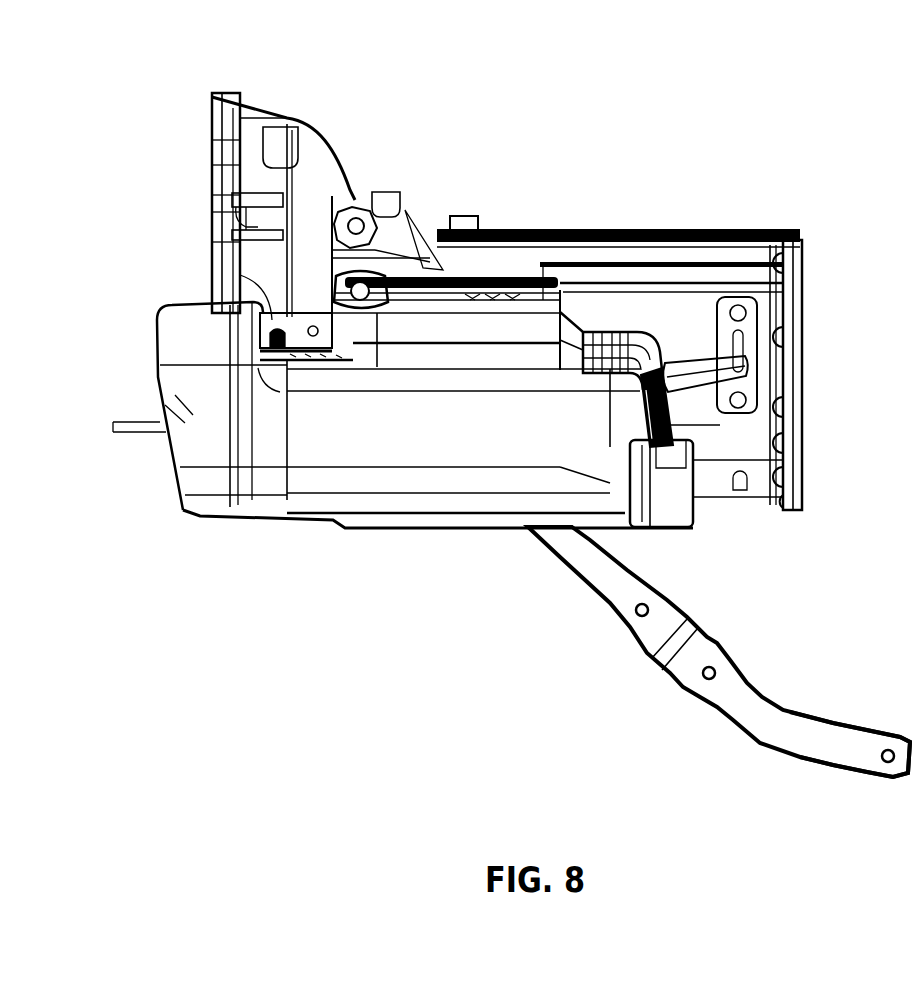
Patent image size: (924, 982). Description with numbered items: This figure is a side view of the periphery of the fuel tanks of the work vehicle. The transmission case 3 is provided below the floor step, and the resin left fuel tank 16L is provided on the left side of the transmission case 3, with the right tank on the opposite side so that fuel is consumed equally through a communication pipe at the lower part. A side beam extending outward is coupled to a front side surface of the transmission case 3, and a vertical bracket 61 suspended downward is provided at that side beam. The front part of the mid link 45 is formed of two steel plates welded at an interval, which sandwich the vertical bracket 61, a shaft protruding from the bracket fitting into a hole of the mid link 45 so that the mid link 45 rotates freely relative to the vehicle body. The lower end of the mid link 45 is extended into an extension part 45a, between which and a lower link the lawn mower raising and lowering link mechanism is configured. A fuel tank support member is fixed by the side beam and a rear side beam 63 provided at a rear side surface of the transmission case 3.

The transmission case 3 is at (313, 150).
The vertical bracket 61 is at (283, 320).
The left fuel tank 16L is at (355, 440).
The rear side beam 63 is at (800, 423).
The mid link 45 is at (612, 566).
The extension part 45a is at (823, 737).